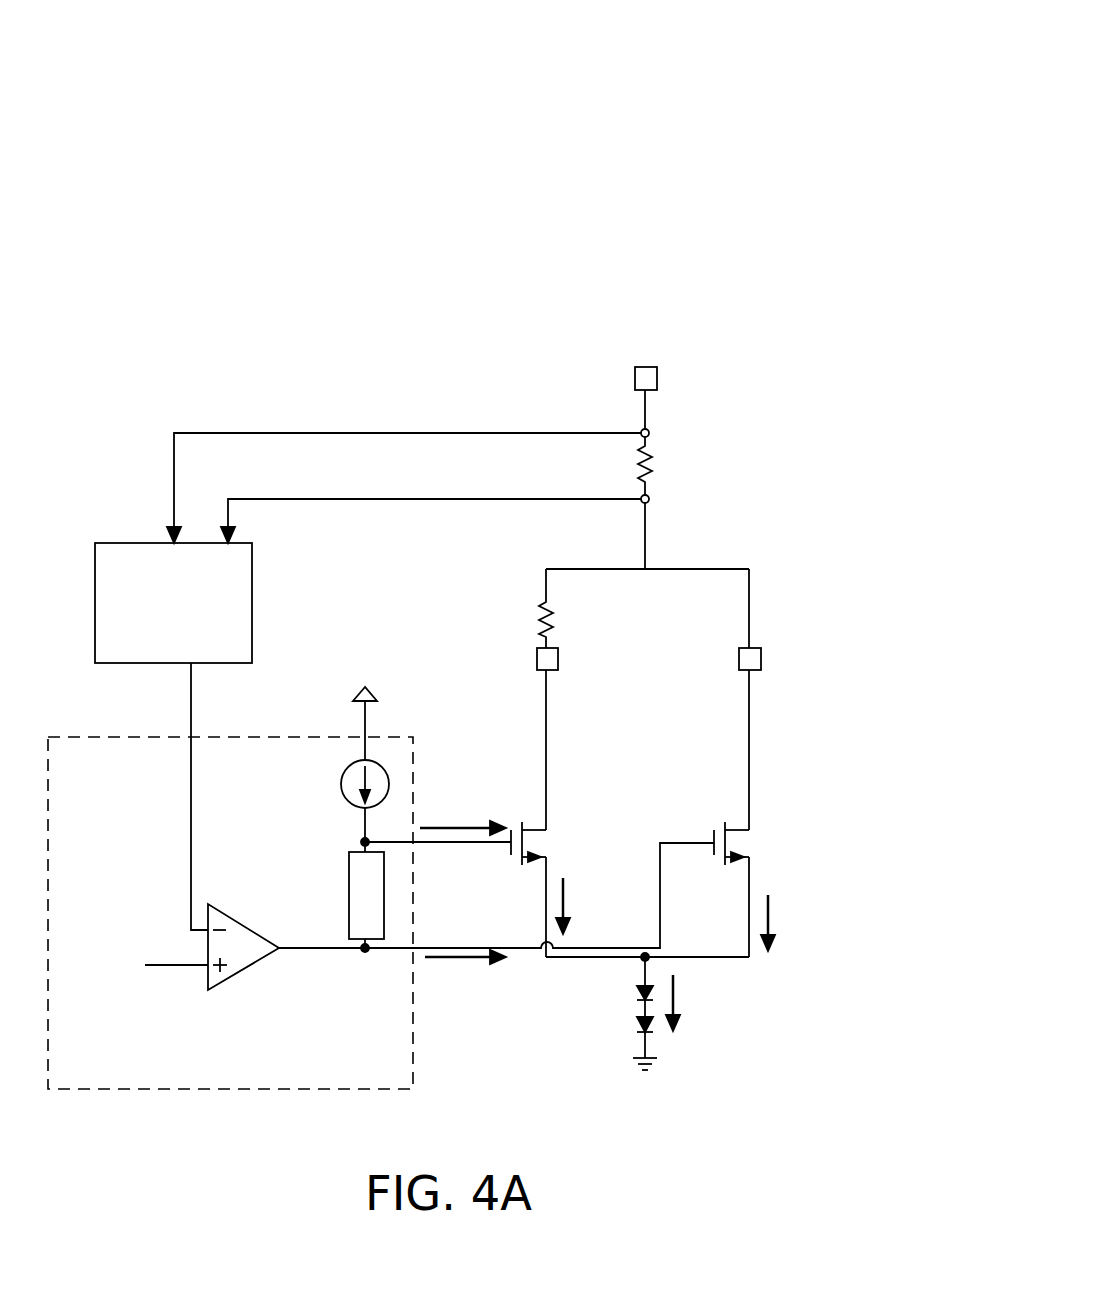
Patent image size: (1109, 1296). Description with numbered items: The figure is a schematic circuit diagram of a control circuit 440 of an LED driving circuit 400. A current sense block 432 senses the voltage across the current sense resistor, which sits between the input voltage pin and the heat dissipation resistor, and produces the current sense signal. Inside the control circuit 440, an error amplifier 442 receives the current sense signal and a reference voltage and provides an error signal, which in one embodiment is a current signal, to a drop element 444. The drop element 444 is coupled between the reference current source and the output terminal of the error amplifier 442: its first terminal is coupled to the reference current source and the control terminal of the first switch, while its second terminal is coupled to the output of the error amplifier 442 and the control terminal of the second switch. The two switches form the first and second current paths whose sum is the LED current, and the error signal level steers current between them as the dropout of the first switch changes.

The LED driving circuit 400 is at (947, 31).
The current sense block 432 is at (130, 663).
The control circuit 440 is at (150, 1089).
The error amplifier 442 is at (208, 990).
The drop element 444 is at (351, 908).